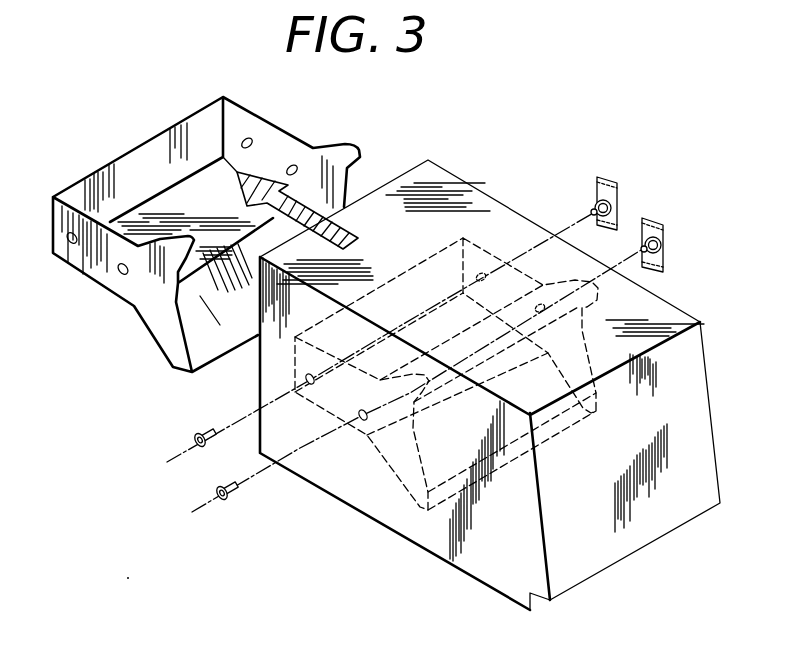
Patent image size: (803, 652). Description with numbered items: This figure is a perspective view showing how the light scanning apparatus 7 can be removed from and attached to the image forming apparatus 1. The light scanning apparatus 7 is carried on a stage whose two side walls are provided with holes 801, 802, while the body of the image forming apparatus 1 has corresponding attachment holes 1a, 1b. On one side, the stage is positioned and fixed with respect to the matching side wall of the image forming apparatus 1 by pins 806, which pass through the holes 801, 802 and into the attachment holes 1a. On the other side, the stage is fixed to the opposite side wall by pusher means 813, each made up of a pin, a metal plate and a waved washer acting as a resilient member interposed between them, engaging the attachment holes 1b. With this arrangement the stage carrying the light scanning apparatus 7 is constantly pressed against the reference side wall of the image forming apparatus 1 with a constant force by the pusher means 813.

The image forming apparatus 1 is at (437, 554).
The attachment hole 1a is at (306, 380).
The attachment hole 1b is at (485, 270).
The light scanning apparatus 7 is at (100, 294).
The hole 801 is at (296, 166).
The hole 802 is at (251, 139).
The pin 806 is at (211, 491).
The pusher means 813 is at (620, 197).